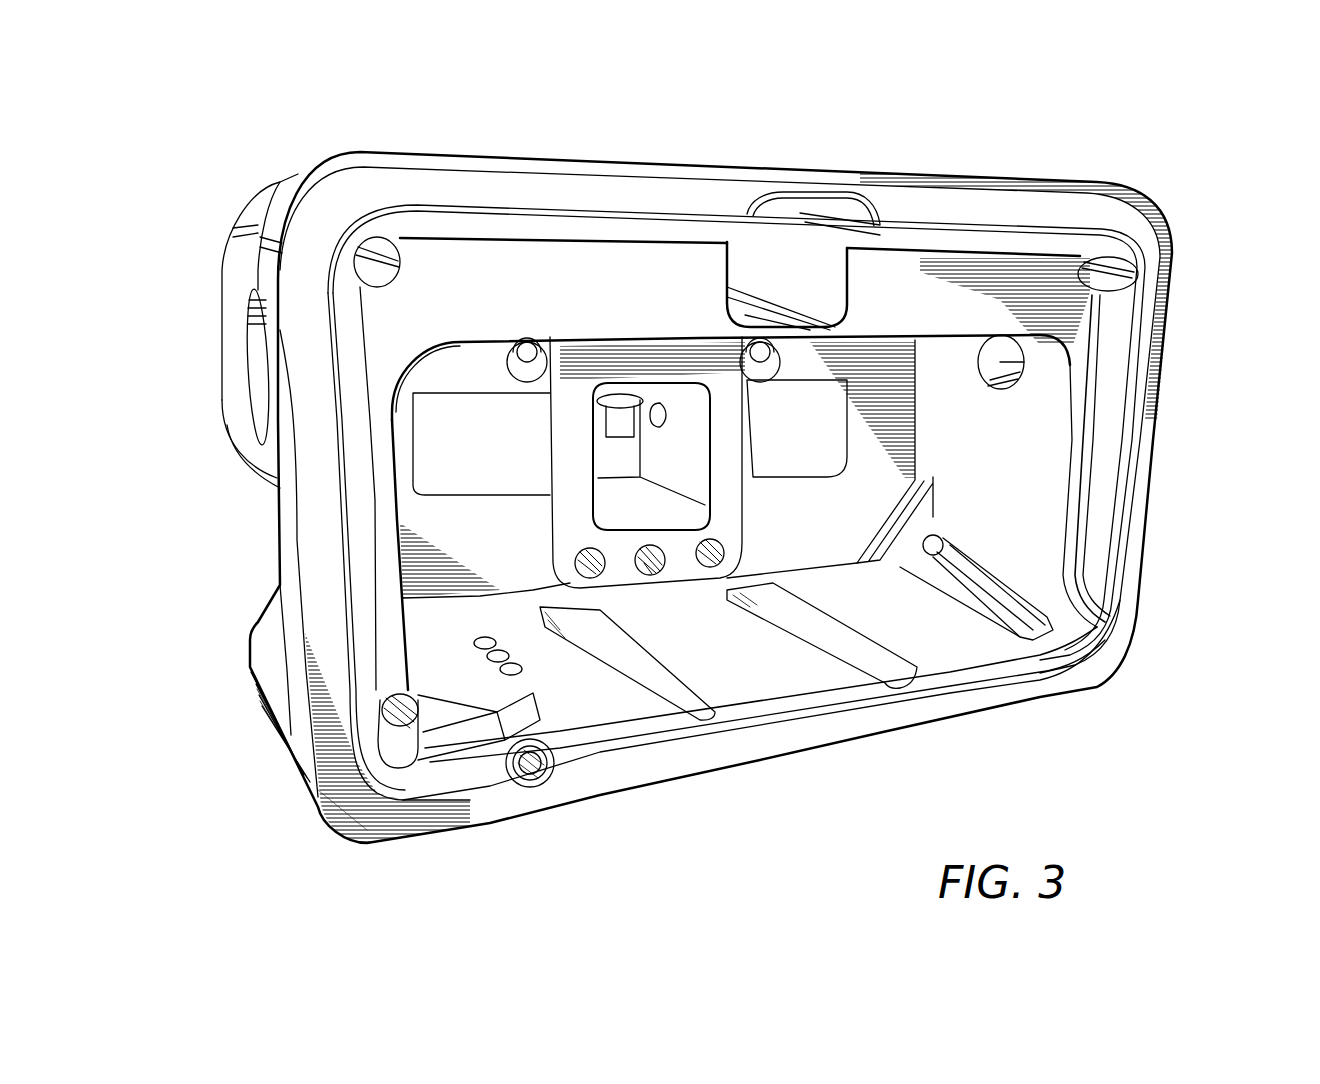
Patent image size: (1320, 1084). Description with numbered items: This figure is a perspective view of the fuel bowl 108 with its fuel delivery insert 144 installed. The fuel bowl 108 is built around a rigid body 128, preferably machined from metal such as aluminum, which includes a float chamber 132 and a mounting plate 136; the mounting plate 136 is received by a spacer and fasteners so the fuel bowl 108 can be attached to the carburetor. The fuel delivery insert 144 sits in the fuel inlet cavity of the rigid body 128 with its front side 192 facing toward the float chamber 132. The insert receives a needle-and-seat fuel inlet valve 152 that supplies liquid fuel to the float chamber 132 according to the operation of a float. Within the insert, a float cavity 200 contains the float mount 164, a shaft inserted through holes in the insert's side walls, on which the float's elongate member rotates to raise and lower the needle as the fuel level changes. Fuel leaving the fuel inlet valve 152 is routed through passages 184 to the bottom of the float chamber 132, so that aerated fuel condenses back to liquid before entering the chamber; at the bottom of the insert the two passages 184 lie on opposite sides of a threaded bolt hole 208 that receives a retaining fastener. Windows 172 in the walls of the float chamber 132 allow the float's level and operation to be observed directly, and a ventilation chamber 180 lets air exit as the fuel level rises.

The fuel bowl 108 is at (362, 124).
The rigid body 128 is at (417, 838).
The float chamber 132 is at (968, 641).
The mounting plate 136 is at (568, 787).
The fuel delivery insert 144 is at (553, 497).
The fuel inlet valve 152 is at (620, 415).
The float mount 164 is at (665, 416).
The windows 172 is at (258, 358).
The ventilation chamber 180 is at (812, 240).
The passages 184 is at (587, 577).
The front side 192 is at (667, 357).
The float cavity 200 is at (690, 471).
The threaded bolt hole 208 is at (647, 575).